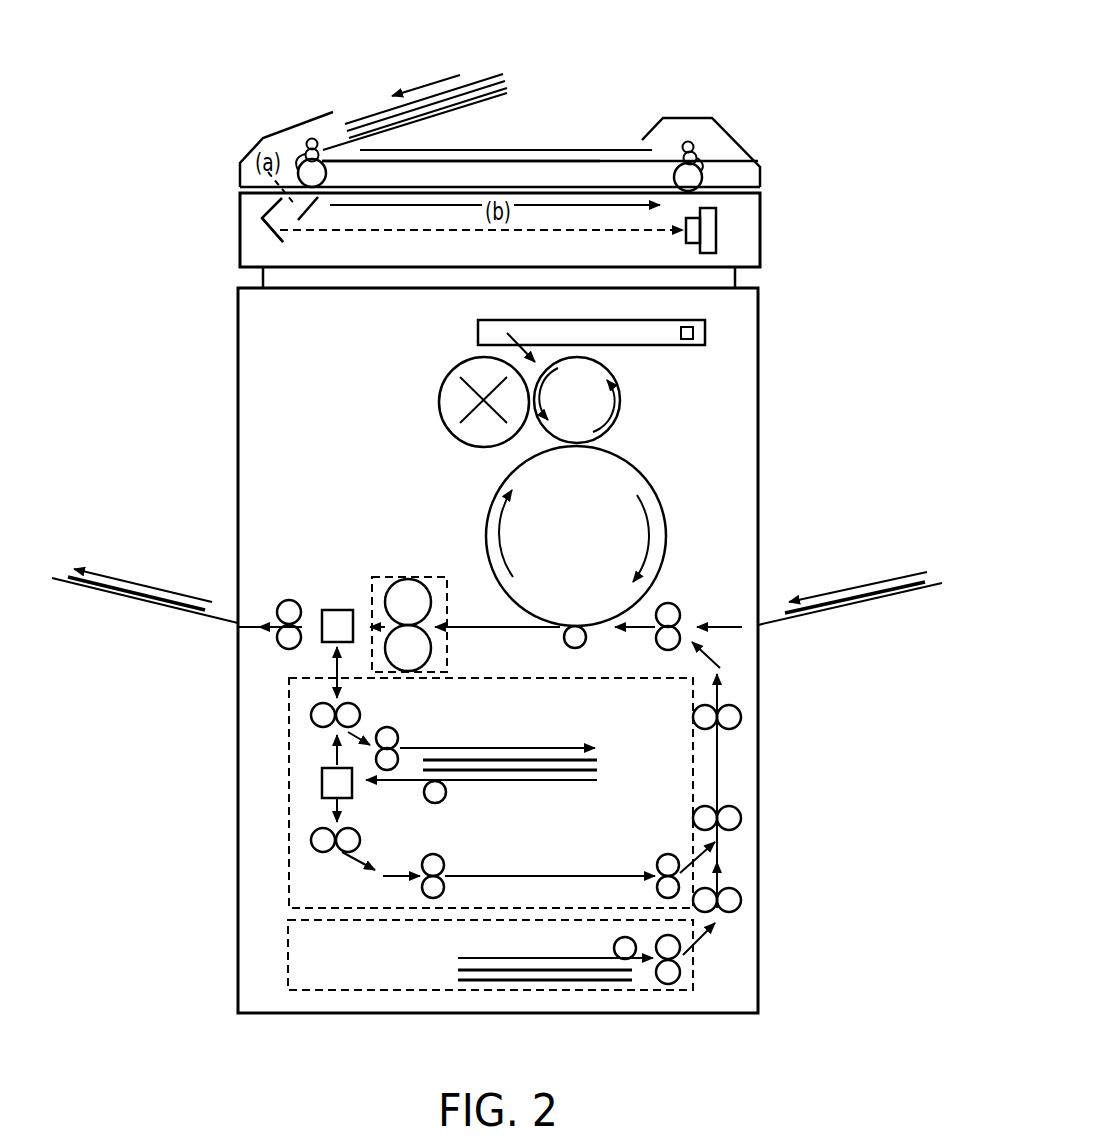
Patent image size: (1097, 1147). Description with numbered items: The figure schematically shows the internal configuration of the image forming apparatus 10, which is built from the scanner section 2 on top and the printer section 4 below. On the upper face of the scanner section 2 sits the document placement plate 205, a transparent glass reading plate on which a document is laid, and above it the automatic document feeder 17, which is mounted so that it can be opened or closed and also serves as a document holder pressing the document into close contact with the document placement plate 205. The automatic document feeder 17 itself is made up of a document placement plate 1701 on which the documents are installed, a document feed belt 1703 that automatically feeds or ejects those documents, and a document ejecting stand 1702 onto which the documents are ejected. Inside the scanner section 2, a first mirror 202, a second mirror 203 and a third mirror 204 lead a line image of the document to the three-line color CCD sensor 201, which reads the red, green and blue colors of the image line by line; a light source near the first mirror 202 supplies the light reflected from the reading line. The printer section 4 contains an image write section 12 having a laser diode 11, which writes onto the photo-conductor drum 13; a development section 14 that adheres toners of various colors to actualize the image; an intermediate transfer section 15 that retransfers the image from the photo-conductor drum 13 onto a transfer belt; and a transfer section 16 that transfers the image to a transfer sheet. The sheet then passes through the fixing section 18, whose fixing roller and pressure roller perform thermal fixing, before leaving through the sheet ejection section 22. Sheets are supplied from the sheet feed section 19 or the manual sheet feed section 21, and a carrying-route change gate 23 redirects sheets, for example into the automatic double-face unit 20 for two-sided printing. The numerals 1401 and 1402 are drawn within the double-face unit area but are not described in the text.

The image forming apparatus 10 is at (740, 58).
The scanner section 2 is at (762, 213).
The printer section 4 is at (763, 386).
The automatic document feeder 17 is at (253, 150).
The document placement plate 1701 is at (514, 92).
The document ejecting stand 1702 is at (541, 150).
The document feed belt 1703 is at (602, 160).
The 3-line color CCD sensor 201 is at (716, 241).
The first mirror 202 is at (315, 213).
The second mirror 203 is at (268, 208).
The third mirror 204 is at (270, 231).
The document placement plate 205 is at (433, 195).
The laser diode 11 is at (689, 340).
The image write section 12 is at (706, 333).
The photo-conductor drum 13 is at (620, 401).
The development section 14 is at (440, 398).
The intermediate transfer section 15 is at (668, 526).
The transfer section 16 is at (585, 645).
The fixing section 18 is at (391, 577).
The sheet feed section 19 is at (288, 953).
The automatic double-face unit 20 is at (289, 850).
The manual sheet feed section 21 is at (845, 608).
The sheet ejection section 22 is at (150, 603).
The carrying-route change gate 23 is at (336, 610).
The sheet 1401 is at (606, 758).
The gate 1402 is at (322, 779).